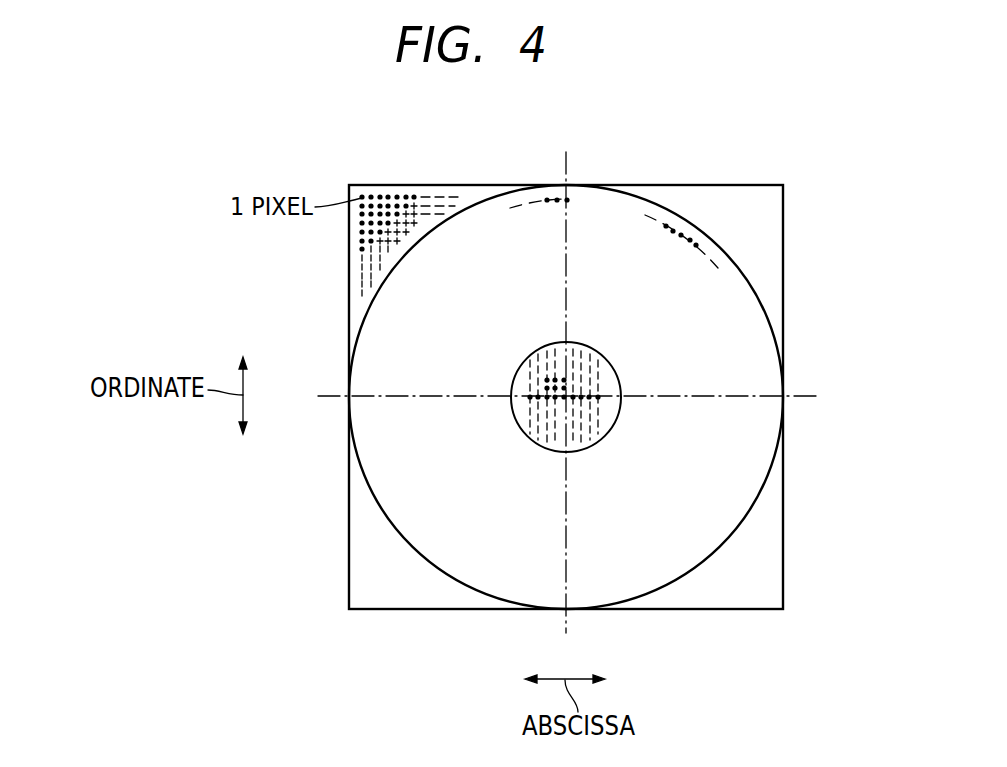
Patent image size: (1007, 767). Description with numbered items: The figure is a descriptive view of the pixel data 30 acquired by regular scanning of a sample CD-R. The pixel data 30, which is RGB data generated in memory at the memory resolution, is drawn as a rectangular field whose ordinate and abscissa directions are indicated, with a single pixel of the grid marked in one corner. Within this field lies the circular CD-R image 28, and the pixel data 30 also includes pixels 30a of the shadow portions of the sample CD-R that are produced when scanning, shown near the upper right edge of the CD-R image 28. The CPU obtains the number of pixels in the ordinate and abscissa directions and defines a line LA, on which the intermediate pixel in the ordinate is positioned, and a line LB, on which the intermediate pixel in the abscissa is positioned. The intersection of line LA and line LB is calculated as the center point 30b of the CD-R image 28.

The CD-R image 28 is at (725, 541).
The pixel data 30 is at (772, 184).
The pixels 30a is at (696, 245).
The center point 30b is at (566, 397).
The line La LA is at (335, 398).
The line Lb LB is at (567, 220).